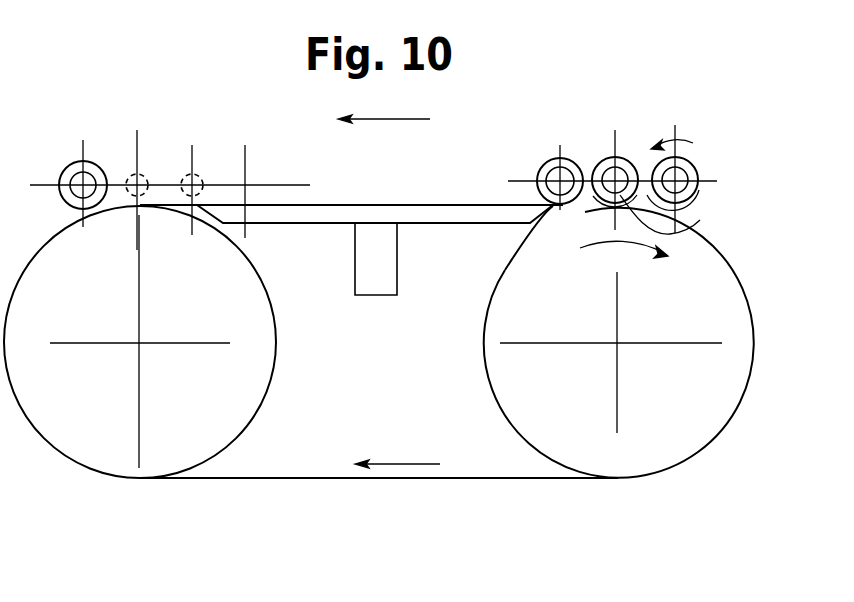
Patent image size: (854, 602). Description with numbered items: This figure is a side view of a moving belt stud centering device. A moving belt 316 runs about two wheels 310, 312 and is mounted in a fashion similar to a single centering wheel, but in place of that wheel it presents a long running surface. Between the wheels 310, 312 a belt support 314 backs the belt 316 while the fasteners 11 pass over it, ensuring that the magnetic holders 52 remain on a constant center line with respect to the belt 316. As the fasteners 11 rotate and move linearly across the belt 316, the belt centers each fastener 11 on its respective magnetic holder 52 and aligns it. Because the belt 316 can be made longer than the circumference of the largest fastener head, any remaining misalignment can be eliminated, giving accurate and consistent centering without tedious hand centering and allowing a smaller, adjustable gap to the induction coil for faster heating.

The fastener 11 is at (549, 159).
The magnetic holder 52 is at (689, 198).
The wheel 310 is at (204, 318).
The wheel 312 is at (671, 327).
The belt support 314 is at (435, 217).
The moving belt 316 is at (335, 203).